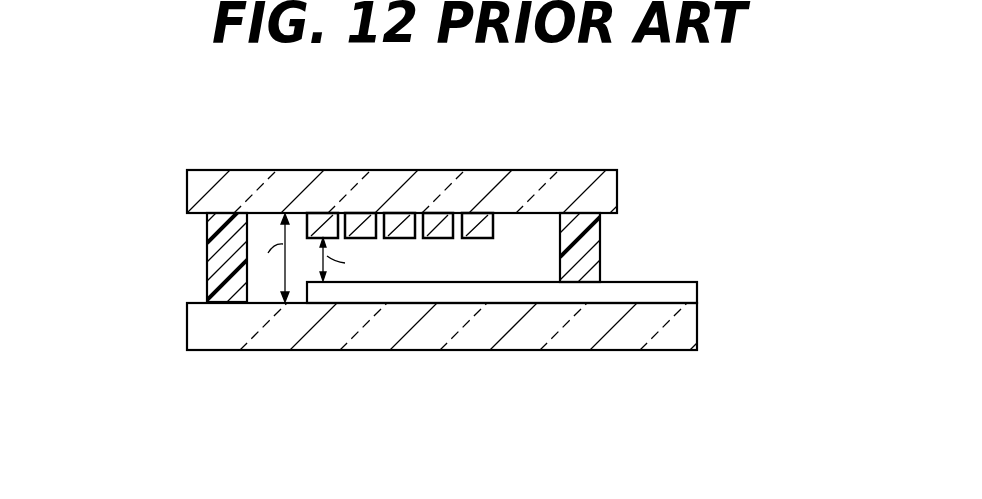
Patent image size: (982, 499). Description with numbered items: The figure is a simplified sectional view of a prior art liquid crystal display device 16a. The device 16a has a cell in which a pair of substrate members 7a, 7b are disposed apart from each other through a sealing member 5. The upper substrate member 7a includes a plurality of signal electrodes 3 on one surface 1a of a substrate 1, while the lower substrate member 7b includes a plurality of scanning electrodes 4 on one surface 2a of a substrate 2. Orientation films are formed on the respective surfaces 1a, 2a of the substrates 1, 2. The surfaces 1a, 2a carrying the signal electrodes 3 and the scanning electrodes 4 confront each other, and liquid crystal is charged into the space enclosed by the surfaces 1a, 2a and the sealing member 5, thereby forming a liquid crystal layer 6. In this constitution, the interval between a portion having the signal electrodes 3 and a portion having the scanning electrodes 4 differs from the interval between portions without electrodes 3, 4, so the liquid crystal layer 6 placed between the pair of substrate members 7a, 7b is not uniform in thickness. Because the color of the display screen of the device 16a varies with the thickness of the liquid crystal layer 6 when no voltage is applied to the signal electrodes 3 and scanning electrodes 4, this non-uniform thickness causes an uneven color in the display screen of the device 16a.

The substrate 1 is at (500, 187).
The surface of substrate 1a is at (517, 215).
The substrate 2 is at (692, 317).
The surface of substrate 2a is at (386, 300).
The signal electrodes 3 is at (478, 218).
The scanning electrodes 4 is at (675, 290).
The sealing member 5 is at (217, 254).
The liquid crystal layer 6 is at (485, 270).
The substrate member 7a is at (132, 157).
The substrate member 7b is at (138, 293).
The liquid crystal display device 16a is at (740, 166).